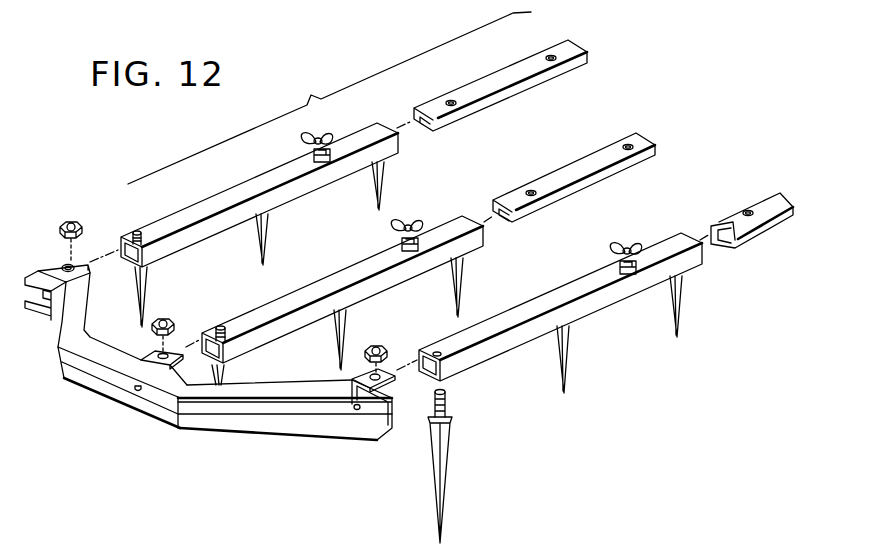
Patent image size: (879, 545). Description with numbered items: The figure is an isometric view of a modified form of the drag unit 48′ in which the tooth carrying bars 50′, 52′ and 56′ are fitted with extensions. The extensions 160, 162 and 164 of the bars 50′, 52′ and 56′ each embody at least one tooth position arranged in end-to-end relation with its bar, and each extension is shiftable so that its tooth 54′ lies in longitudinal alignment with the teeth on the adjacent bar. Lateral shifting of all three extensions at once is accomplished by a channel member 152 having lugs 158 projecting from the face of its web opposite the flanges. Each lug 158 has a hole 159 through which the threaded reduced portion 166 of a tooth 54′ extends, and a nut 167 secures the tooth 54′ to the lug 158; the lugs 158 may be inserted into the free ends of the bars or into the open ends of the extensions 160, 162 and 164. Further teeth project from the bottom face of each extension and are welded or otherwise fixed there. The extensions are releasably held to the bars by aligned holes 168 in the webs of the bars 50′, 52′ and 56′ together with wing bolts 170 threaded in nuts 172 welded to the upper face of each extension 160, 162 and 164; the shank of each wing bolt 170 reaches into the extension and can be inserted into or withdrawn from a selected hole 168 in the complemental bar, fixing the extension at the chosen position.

The drag unit 48′ is at (626, 102).
The tooth carrying bar 50′ is at (507, 78).
The tooth carrying bar 52′ is at (752, 236).
The tooth 54′ is at (445, 467).
The tooth carrying bar 56′ is at (605, 178).
The channel member 152 is at (258, 424).
The lug 158 is at (62, 266).
The hole 159 is at (75, 264).
The extension 160 is at (290, 196).
The extension 162 is at (503, 351).
The extension 164 is at (374, 288).
The threaded reduced portion 166 is at (447, 401).
The nut 167 is at (80, 221).
The hole 168 is at (456, 107).
The wing bolt 170 is at (421, 222).
The nut 172 is at (410, 252).